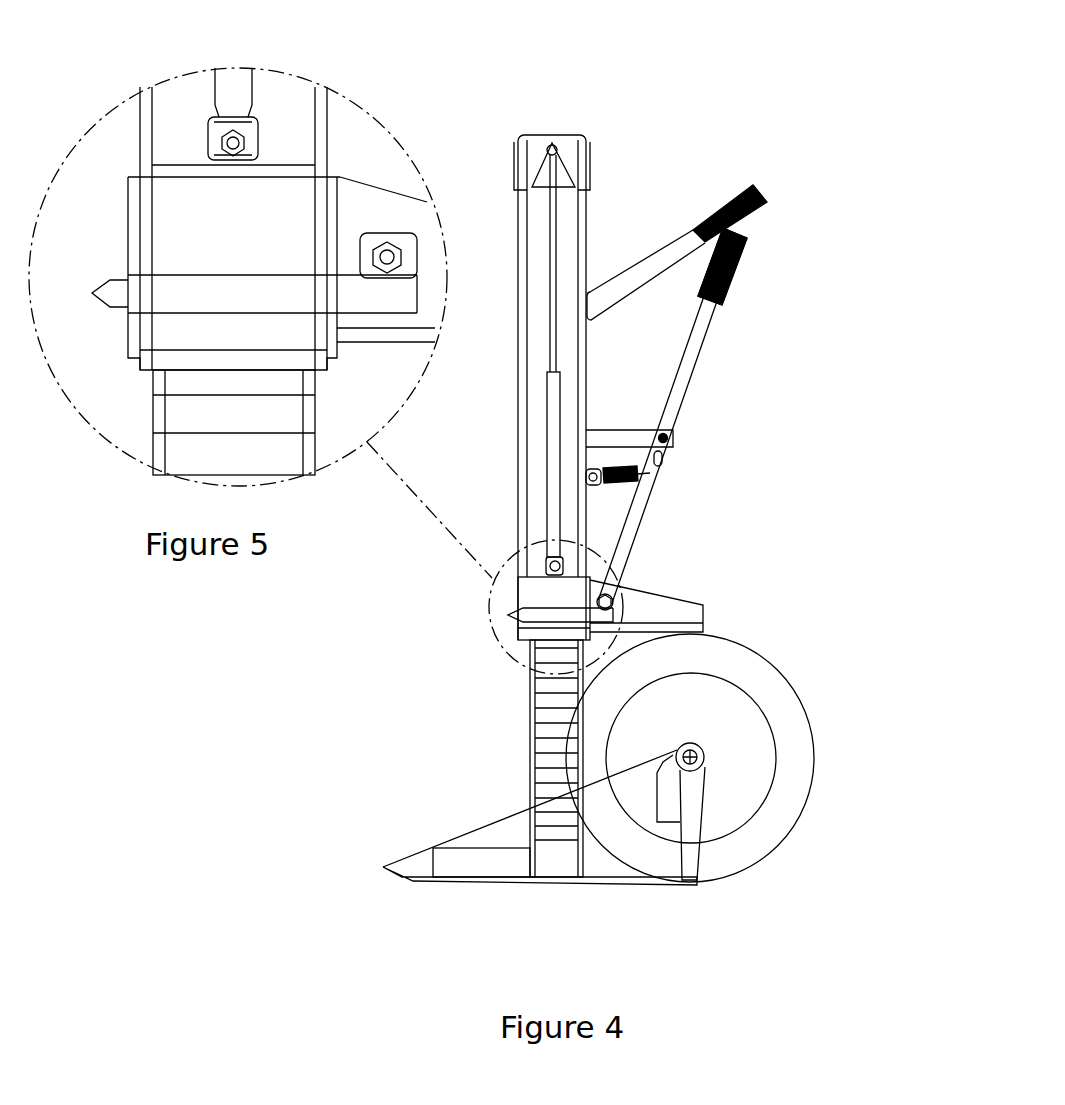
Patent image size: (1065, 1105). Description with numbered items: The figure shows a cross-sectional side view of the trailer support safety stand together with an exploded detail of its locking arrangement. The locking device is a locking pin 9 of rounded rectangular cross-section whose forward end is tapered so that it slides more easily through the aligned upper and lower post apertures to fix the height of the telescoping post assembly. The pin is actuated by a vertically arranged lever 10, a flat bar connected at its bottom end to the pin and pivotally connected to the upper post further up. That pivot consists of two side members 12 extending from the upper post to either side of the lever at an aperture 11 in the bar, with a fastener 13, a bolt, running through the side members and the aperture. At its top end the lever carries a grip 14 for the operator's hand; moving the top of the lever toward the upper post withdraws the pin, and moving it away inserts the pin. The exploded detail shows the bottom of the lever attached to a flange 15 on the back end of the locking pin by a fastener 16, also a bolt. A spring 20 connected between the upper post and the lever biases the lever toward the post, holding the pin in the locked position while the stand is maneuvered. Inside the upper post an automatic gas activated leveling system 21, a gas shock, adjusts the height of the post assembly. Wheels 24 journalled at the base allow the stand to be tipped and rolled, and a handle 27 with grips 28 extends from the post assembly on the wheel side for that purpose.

In FIG. 5, the locking pin 9 is at (266, 166).
In FIG. 4, the locking pin 9 is at (552, 616).
In FIG. 4, the lever 10 is at (705, 454).
In FIG. 4, the aperture 11 is at (668, 455).
In FIG. 4, the side members 12 is at (618, 442).
In FIG. 4, the fastener 13 is at (669, 437).
In FIG. 4, the grip 14 is at (737, 273).
In FIG. 5, the flange 15 is at (367, 273).
In FIG. 5, the fastener 16 is at (395, 258).
In FIG. 4, the spring 20 is at (628, 478).
In FIG. 4, the automatic gas activated leveling system 21 is at (667, 300).
In FIG. 4, the wheels 24 is at (797, 676).
In FIG. 4, the handle 27 is at (633, 268).
In FIG. 4, the grips 28 is at (763, 187).